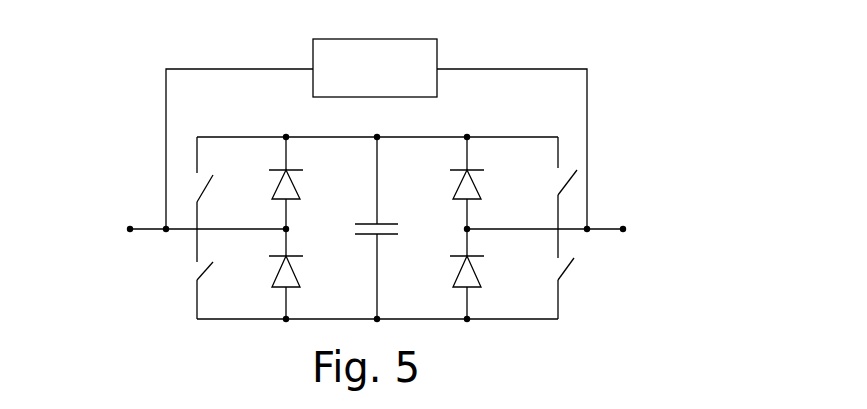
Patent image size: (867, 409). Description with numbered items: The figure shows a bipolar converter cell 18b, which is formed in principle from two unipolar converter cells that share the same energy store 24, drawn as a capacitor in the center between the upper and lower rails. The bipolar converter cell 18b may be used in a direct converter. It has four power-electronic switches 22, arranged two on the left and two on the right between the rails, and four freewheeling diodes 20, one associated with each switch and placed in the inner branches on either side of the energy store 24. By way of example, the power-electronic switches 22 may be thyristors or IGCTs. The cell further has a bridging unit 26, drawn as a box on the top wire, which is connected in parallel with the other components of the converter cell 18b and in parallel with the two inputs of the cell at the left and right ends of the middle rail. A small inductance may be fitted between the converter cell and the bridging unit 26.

The bipolar converter cell 18b is at (633, 63).
The freewheeling diode 20 is at (297, 180).
The power-electronic switch 22 is at (205, 192).
The energy store 24 is at (387, 222).
The bridging unit 26 is at (313, 55).